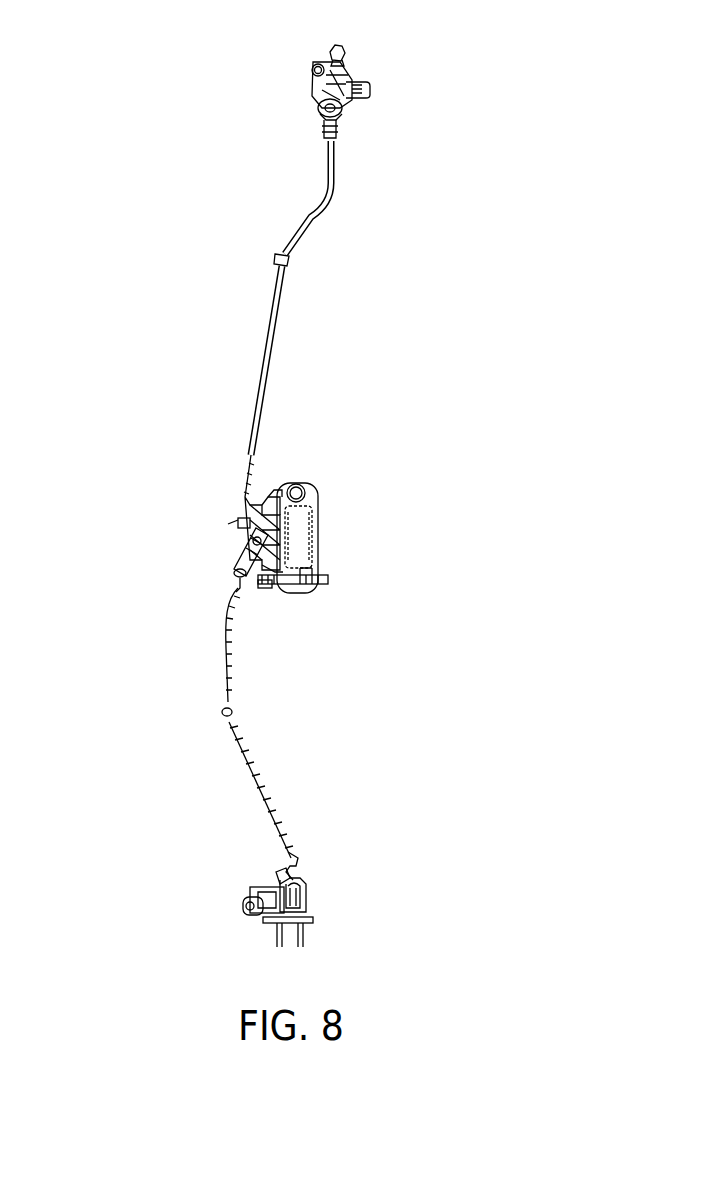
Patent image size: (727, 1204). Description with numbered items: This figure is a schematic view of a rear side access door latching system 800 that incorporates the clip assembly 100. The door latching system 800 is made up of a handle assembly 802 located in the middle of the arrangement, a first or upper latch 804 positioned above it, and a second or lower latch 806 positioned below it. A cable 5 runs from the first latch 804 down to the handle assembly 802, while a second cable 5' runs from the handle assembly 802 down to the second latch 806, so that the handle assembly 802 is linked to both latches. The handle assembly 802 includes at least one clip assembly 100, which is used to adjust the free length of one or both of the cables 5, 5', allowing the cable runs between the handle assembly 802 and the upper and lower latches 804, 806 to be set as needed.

The door latching system 800 is at (126, 193).
The first or upper latch 804 is at (347, 72).
The cable 5 is at (308, 319).
The handle assembly 802 is at (351, 541).
The clip assembly 100 is at (240, 525).
The cable 5' is at (261, 723).
The second or lower latch 806 is at (312, 908).